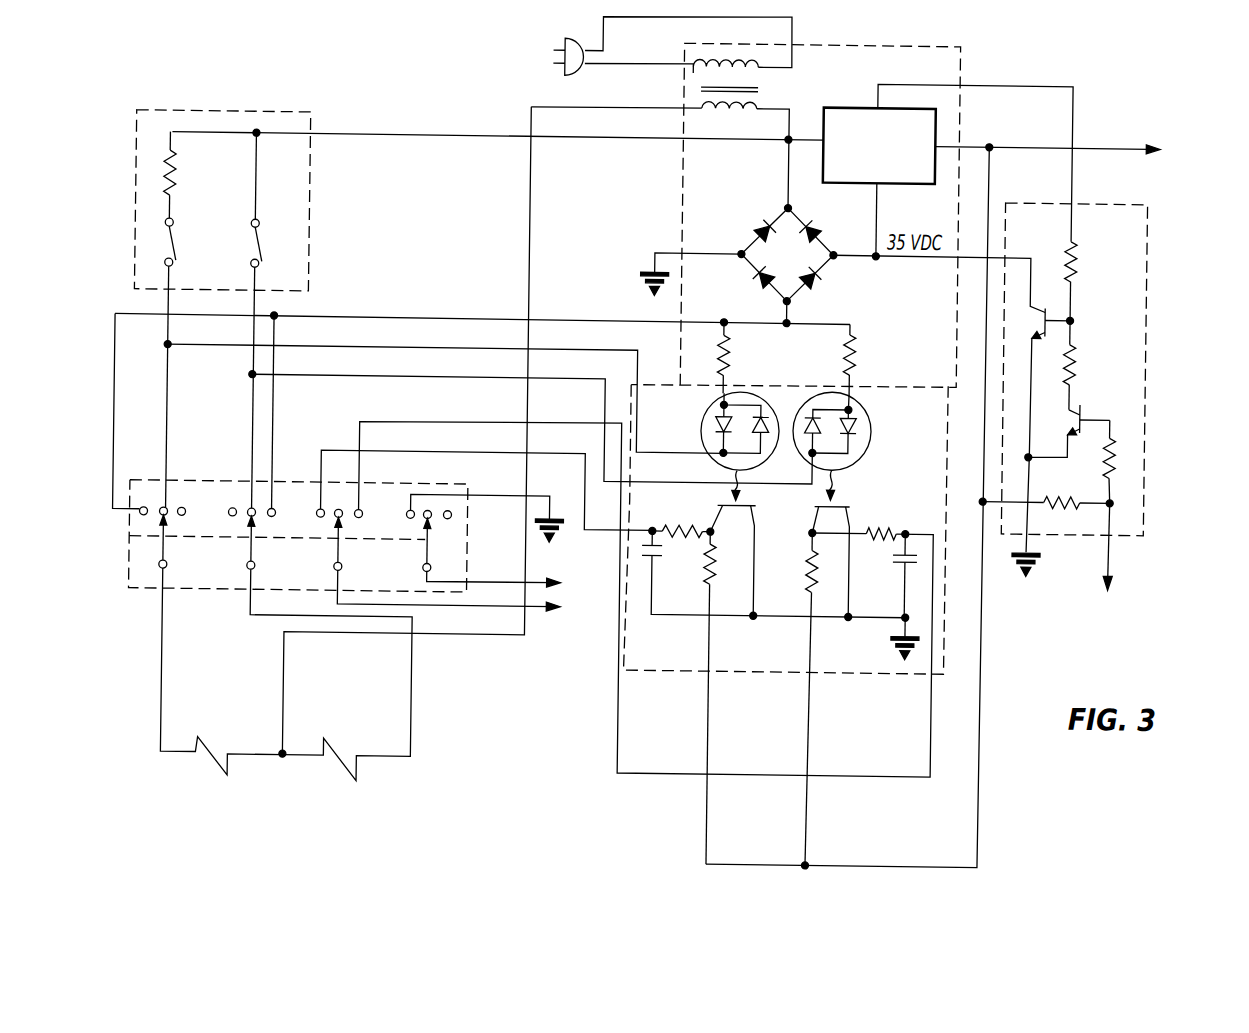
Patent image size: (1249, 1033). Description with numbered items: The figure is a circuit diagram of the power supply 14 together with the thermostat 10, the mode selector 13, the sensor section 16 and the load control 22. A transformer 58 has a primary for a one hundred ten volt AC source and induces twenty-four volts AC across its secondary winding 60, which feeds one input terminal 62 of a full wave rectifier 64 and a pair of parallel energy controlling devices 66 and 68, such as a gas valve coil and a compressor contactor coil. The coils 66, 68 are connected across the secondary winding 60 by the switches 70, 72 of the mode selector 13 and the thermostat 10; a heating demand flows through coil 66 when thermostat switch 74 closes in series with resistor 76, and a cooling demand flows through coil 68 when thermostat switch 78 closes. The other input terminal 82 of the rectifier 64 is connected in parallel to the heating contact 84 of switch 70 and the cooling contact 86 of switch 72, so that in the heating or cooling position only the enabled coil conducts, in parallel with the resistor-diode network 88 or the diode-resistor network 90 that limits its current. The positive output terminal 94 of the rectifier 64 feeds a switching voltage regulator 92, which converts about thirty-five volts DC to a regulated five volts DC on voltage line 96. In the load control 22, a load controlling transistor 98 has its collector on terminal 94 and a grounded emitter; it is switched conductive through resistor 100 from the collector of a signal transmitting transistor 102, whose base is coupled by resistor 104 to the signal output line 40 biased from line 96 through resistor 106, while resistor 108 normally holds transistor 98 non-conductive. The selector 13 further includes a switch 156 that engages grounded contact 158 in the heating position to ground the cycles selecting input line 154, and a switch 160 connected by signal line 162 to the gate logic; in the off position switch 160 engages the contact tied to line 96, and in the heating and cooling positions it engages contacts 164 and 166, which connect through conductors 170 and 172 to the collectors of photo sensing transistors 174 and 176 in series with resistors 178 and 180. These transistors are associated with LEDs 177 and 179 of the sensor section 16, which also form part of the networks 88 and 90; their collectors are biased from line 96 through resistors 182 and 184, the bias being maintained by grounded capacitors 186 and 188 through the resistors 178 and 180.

The thermostat 10 is at (282, 113).
The mode selector 13 is at (129, 603).
The power supply 14 is at (965, 46).
The sensor section 16 is at (910, 683).
The load control 22 is at (1150, 195).
The signal output line 40 is at (1114, 521).
The transformer 58 is at (676, 89).
The secondary winding 60 is at (755, 99).
The input terminal 62 is at (789, 207).
The rectifier 64 is at (749, 199).
The energy controlling device 66 is at (210, 775).
The energy controlling device 68 is at (347, 777).
The switch 70 is at (165, 550).
The switch 72 is at (254, 554).
The thermostat switch 74 is at (166, 238).
The resistor 76 is at (173, 174).
The thermostat switch 78 is at (259, 239).
The input terminal 82 is at (773, 302).
The heating contact 84 is at (140, 520).
The cooling contact 86 is at (275, 521).
The resistor-diode network 88 is at (749, 375).
The diode-resistor network 90 is at (868, 375).
The switching voltage regulator 92 is at (856, 102).
The positive output terminal 94 is at (831, 253).
The voltage line 96 is at (1101, 142).
The load controlling transistor 98 is at (1042, 310).
The resistor 100 is at (1075, 355).
The signal transmitting transistor 102 is at (1070, 419).
The resistor 104 is at (1118, 452).
The resistor 106 is at (1066, 502).
The resistor 108 is at (1074, 268).
The cycles selecting input line 154 is at (536, 583).
The switch 156 is at (432, 553).
The grounded contact 158 is at (411, 518).
The switch 160 is at (343, 555).
The signal line 162 is at (535, 610).
The contact 164 is at (319, 510).
The contact 166 is at (364, 511).
The conductor 170 is at (447, 454).
The conductor 172 is at (404, 424).
The photo sensing transistor 174 is at (722, 522).
The photo sensing transistor 176 is at (816, 517).
The LED 177 is at (873, 419).
The resistor 178 is at (690, 523).
The LED 179 is at (701, 428).
The resistor 180 is at (896, 521).
The resistor 182 is at (716, 566).
The resistor 184 is at (810, 563).
The capacitor 186 is at (657, 562).
The capacitor 188 is at (899, 558).